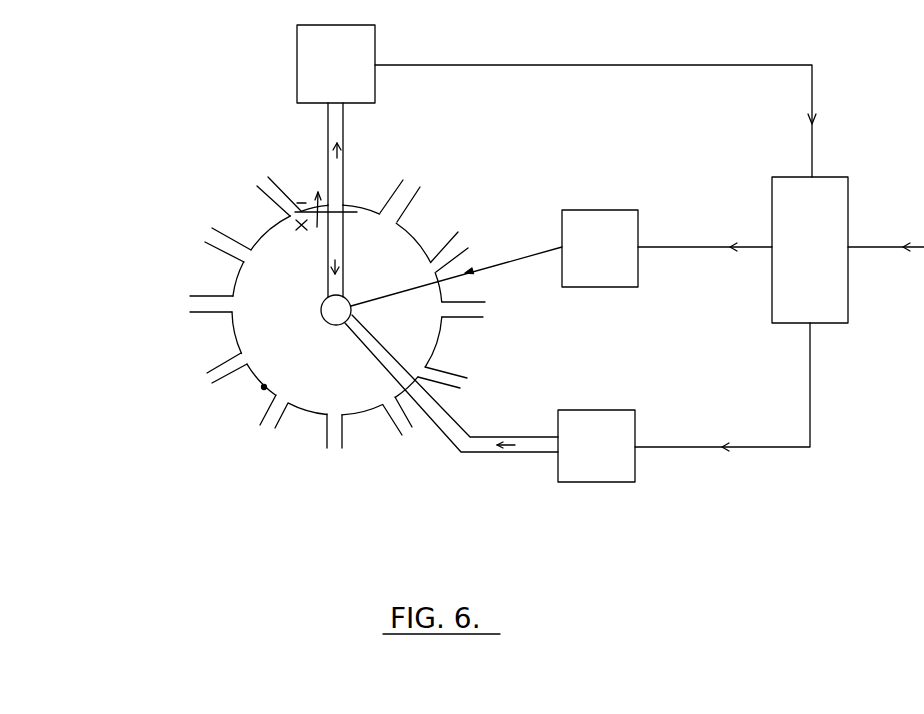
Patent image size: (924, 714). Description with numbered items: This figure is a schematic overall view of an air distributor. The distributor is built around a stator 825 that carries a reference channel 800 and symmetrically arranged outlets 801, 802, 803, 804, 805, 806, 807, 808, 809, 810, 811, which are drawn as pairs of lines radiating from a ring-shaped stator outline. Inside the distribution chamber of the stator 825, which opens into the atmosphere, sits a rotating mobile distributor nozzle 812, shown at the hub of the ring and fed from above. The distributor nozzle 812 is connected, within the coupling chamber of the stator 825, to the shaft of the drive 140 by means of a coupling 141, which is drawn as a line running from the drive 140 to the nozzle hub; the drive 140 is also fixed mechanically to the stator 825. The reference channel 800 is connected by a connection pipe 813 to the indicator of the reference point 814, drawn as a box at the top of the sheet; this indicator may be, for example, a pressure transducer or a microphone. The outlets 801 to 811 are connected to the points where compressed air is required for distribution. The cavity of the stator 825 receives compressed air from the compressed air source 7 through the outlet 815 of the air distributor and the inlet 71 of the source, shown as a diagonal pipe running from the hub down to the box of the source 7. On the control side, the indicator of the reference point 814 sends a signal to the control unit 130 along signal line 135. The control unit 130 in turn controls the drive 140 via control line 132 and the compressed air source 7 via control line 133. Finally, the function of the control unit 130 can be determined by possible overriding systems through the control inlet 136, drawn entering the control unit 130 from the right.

The compressed air source 7 is at (596, 446).
The inlet 71 is at (505, 435).
The control unit 130 is at (810, 250).
The control line 132 is at (705, 237).
The control line 133 is at (722, 387).
The signal line 135 is at (595, 110).
The control inlet 136 is at (886, 238).
The drive 140 is at (600, 248).
The coupling 141 is at (456, 276).
The reference channel 800 is at (337, 295).
The outlet 801 is at (415, 190).
The outlet 802 is at (470, 244).
The outlet 803 is at (491, 307).
The outlet 804 is at (470, 381).
The outlet 805 is at (410, 428).
The outlet 806 is at (333, 447).
The outlet 807 is at (267, 427).
The outlet 808 is at (203, 374).
The outlet 809 is at (185, 303).
The outlet 810 is at (210, 238).
The outlet 811 is at (270, 185).
The distributor nozzle 812 is at (355, 265).
The connection pipe 813 is at (359, 154).
The indicator of the reference point 814 is at (336, 64).
The outlet 815 is at (451, 383).
The stator 825 is at (262, 388).